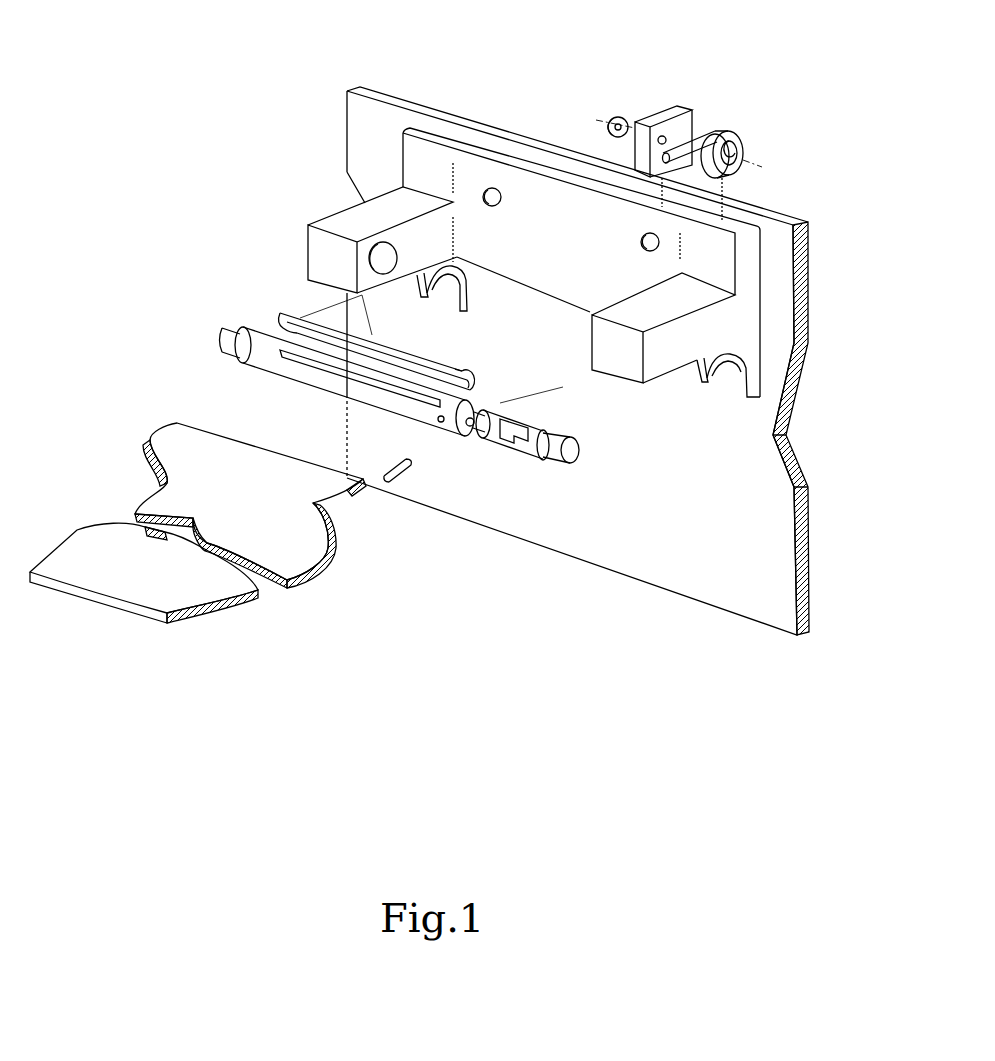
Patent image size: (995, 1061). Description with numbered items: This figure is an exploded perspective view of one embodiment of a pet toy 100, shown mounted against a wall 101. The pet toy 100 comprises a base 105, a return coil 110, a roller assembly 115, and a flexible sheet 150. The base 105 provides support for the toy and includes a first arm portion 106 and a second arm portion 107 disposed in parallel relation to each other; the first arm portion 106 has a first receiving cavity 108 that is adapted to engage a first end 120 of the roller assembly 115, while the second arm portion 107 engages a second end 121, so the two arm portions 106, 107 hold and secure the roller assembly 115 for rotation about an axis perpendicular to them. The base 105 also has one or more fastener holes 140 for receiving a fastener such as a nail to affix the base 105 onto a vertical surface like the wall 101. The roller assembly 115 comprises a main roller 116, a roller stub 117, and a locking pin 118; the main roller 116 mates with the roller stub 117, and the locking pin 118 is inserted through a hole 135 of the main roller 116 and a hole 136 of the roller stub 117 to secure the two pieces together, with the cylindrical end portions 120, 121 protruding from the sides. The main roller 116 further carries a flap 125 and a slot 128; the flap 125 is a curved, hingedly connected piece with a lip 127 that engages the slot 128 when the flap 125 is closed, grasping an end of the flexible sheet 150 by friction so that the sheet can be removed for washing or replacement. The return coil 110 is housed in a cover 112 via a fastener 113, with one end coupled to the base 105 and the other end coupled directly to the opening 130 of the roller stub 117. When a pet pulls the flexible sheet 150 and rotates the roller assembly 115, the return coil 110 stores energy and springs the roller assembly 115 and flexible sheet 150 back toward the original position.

The pet toy 100 is at (226, 61).
The wall 101 is at (695, 502).
The base 105 is at (581, 244).
The first arm portion 106 is at (390, 185).
The second arm portion 107 is at (665, 383).
The first receiving cavity 108 is at (378, 247).
The return coil 110 is at (729, 131).
The cover 112 is at (683, 107).
The fastener 113 is at (618, 117).
The roller assembly 115 is at (206, 287).
The main roller 116 is at (381, 391).
The roller stub 117 is at (510, 452).
The locking pin 118 is at (407, 478).
The first end 120 is at (223, 342).
The second end 121 is at (553, 460).
The flap 125 is at (460, 373).
The lip 127 is at (388, 347).
The slot 128 is at (357, 378).
The opening 130 is at (535, 456).
The hole 135 is at (439, 423).
The hole 136 is at (471, 427).
The fastener hole 140 is at (493, 190).
The flexible sheet 150 is at (160, 432).